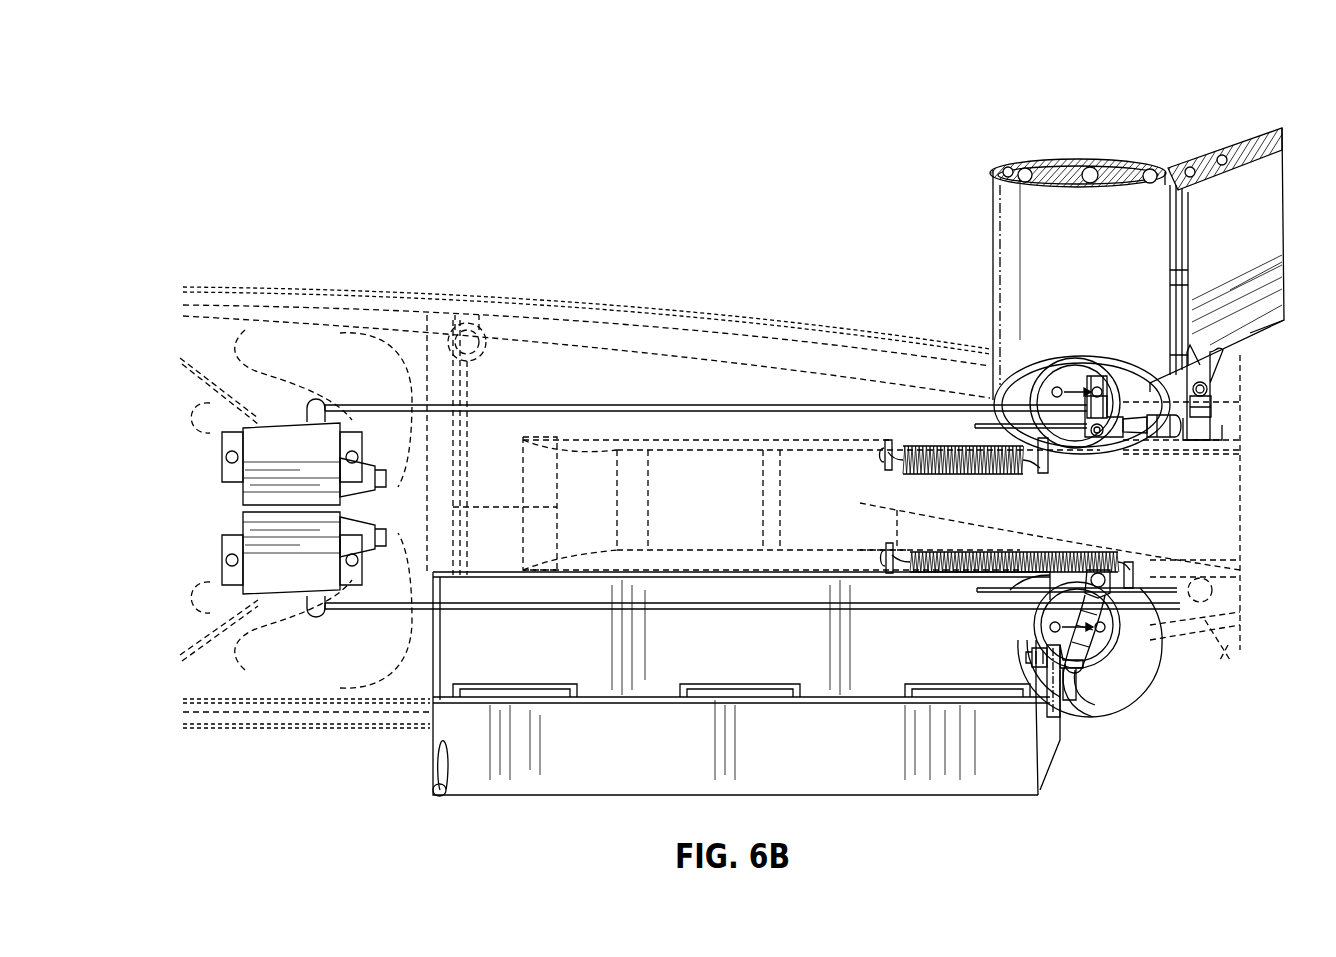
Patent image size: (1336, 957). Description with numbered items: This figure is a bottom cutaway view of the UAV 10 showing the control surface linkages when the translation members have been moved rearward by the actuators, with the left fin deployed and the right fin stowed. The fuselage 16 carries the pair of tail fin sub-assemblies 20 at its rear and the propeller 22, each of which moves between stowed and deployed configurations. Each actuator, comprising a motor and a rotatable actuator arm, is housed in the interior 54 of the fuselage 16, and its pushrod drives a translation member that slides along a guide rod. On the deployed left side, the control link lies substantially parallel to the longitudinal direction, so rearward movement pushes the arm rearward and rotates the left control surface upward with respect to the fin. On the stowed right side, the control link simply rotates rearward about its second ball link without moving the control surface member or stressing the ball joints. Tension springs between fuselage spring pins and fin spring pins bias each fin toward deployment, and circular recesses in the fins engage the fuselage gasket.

The UAV 10 is at (413, 212).
The fuselage 16 is at (262, 290).
The tail fin sub-assembly 20 is at (1050, 765).
The propeller 22 is at (1212, 622).
The interior of the fuselage 54 is at (543, 360).